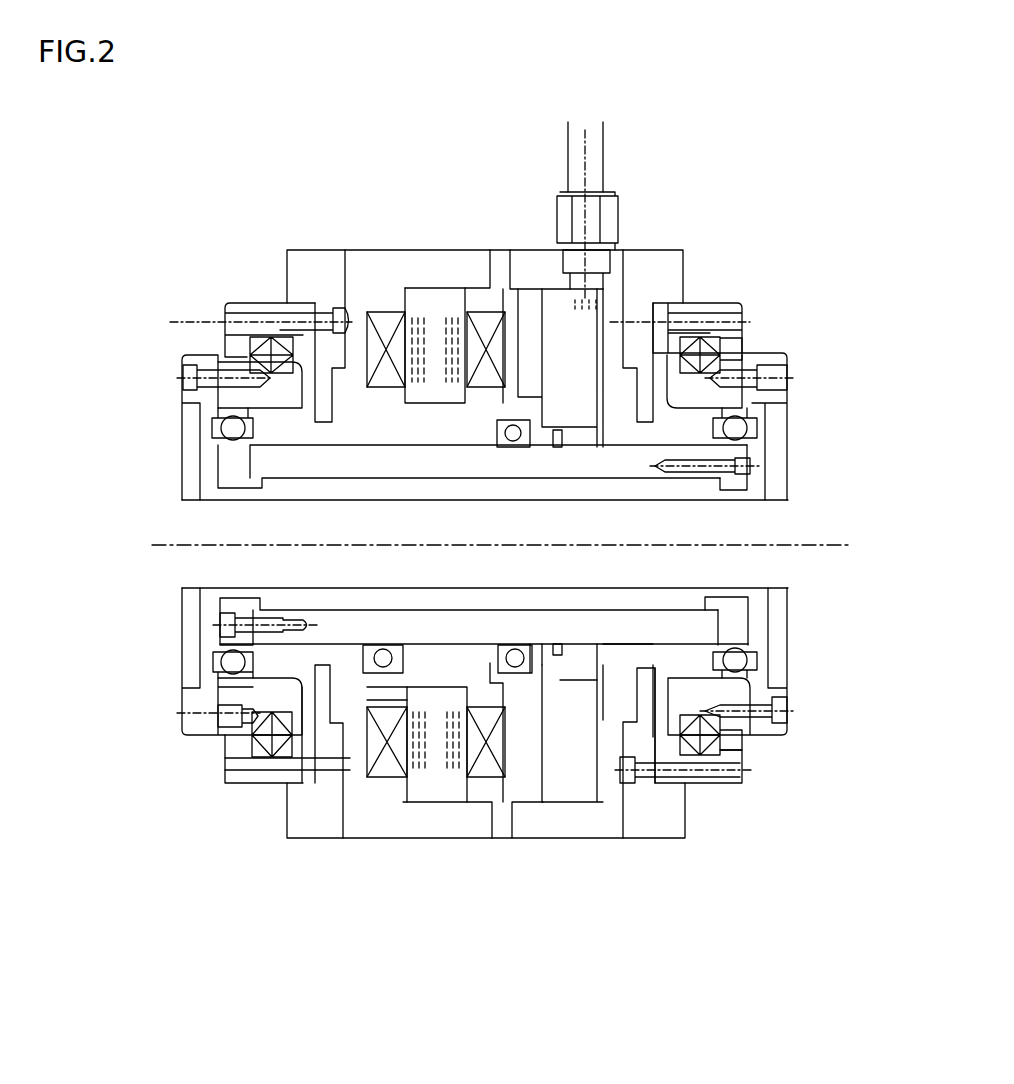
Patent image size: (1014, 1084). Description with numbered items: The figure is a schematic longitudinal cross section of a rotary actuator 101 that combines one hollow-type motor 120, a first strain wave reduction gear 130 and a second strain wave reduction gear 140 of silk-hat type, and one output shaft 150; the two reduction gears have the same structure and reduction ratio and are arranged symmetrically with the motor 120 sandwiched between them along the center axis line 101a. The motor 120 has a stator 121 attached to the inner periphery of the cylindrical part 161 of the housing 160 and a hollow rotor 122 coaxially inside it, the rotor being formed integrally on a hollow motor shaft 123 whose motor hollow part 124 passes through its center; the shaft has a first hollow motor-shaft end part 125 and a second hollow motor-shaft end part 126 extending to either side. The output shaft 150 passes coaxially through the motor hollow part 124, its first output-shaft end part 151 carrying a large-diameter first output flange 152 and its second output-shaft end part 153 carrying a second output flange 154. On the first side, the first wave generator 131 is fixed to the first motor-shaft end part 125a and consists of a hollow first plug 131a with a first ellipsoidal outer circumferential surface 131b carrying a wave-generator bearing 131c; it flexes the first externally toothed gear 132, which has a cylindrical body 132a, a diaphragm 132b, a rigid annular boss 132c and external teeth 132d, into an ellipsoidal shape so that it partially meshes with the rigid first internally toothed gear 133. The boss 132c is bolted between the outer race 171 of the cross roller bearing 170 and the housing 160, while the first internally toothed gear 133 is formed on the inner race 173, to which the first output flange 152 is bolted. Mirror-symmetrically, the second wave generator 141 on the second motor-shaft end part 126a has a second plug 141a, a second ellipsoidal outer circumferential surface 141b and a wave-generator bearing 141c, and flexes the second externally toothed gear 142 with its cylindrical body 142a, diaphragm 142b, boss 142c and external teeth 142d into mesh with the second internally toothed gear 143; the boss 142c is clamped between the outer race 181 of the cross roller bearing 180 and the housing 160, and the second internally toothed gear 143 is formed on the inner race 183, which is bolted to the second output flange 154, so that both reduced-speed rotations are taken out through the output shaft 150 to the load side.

The rotary actuator 101 is at (325, 170).
The center axis line 101a is at (820, 543).
The hollow-type motor 120 is at (443, 215).
The stator 121 is at (470, 798).
The hollow rotor 122 is at (490, 683).
The hollow motor shaft 123 is at (547, 607).
The motor hollow part 124 is at (712, 630).
The first hollow motor-shaft end part 125 is at (297, 637).
The first motor-shaft end part 125a is at (253, 640).
The second hollow motor-shaft end part 126 is at (660, 630).
The second motor-shaft end part 126a is at (776, 712).
The first strain wave reduction gear 130 is at (240, 282).
The first wave generator 131 is at (58, 633).
The first plug 131a is at (215, 610).
The first ellipsoidal outer circumferential surface 131b is at (215, 663).
The wave-generator bearing 131c is at (215, 676).
The first externally toothed gear 132 is at (75, 318).
The cylindrical body 132a is at (228, 393).
The diaphragm 132b is at (225, 370).
The boss 132c is at (290, 337).
The external teeth 132d is at (228, 398).
The first internally toothed gear 133 is at (235, 707).
The second strain wave reduction gear 140 is at (707, 280).
The second wave generator 141 is at (872, 617).
The second plug 141a is at (752, 612).
The second ellipsoidal outer circumferential surface 141b is at (748, 655).
The wave-generator bearing 141c is at (748, 678).
The second externally toothed gear 142 is at (872, 343).
The cylindrical body 142a is at (690, 393).
The diaphragm 142b is at (730, 378).
The boss 142c is at (660, 340).
The external teeth 142d is at (718, 398).
The second internally toothed gear 143 is at (720, 723).
The output shaft 150 is at (490, 495).
The first output-shaft end part 151 is at (228, 528).
The first output flange 152 is at (180, 477).
The second output-shaft end part 153 is at (730, 560).
The second output flange 154 is at (790, 473).
The housing 160 is at (387, 248).
The cylindrical part 161 is at (437, 823).
The cross roller bearing 170 is at (100, 848).
The outer race 171 is at (225, 778).
The inner race 173 is at (250, 748).
The cross roller bearing 180 is at (858, 780).
The outer race 181 is at (737, 780).
The inner race 183 is at (722, 722).